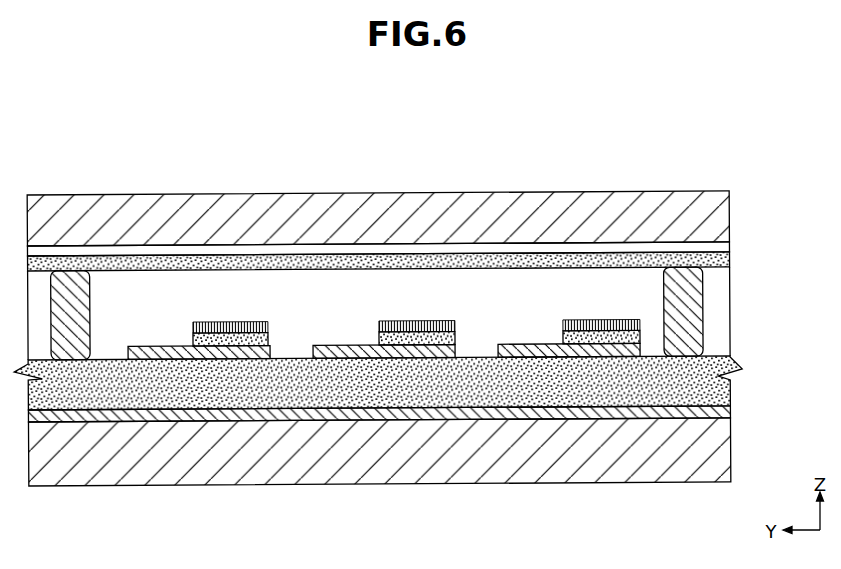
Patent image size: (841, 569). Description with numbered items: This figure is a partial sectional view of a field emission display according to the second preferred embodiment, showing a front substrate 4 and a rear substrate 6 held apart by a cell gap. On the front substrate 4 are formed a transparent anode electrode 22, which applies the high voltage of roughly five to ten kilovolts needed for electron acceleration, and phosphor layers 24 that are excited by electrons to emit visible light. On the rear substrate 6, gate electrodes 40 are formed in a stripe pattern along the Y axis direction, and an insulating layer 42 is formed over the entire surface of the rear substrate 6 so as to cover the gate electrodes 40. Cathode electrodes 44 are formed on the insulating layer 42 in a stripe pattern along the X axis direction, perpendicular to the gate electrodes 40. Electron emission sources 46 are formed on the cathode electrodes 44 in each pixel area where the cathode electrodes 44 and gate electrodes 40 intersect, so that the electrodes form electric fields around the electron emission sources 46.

The front substrate 4 is at (88, 195).
The rear substrate 6 is at (717, 449).
The transparent anode electrode 22 is at (258, 250).
The phosphor layers 24 is at (542, 260).
The gate electrodes 40 is at (373, 416).
The insulating layer 42 is at (716, 391).
The cathode electrodes 44 is at (161, 350).
The electron emission sources 46 is at (412, 320).